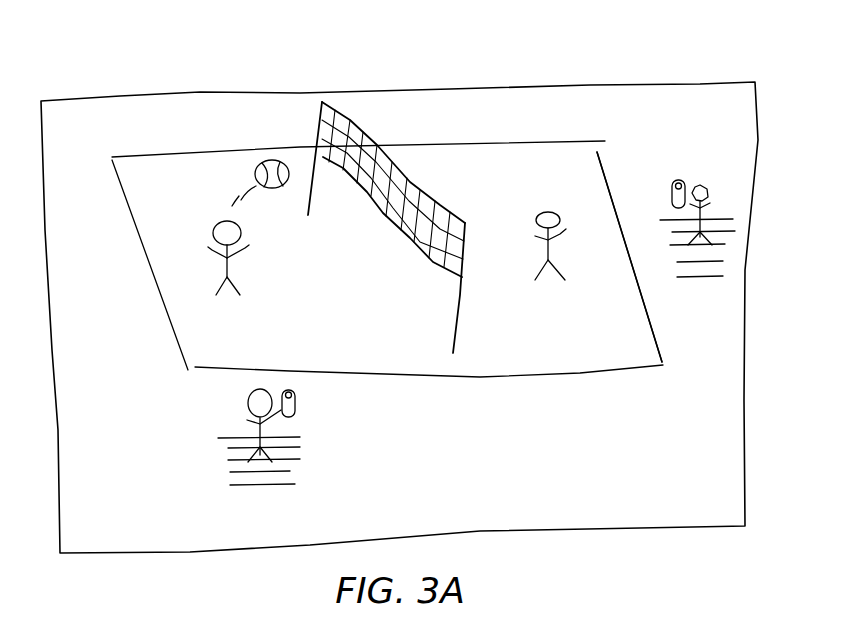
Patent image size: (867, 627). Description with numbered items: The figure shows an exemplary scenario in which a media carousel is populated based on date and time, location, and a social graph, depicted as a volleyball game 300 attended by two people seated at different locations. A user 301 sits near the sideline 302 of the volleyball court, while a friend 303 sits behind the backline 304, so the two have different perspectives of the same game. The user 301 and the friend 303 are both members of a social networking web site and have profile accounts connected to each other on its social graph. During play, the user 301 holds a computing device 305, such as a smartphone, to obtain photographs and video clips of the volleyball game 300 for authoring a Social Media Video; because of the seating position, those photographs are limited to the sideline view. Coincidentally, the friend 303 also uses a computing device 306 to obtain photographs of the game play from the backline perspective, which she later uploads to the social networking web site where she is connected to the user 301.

The volleyball game 300 is at (106, 78).
The user 301 is at (238, 406).
The sideline 302 is at (477, 377).
The friend 303 is at (713, 195).
The backline 304 is at (645, 322).
The computing device 305 is at (297, 403).
The computing device 306 is at (677, 180).